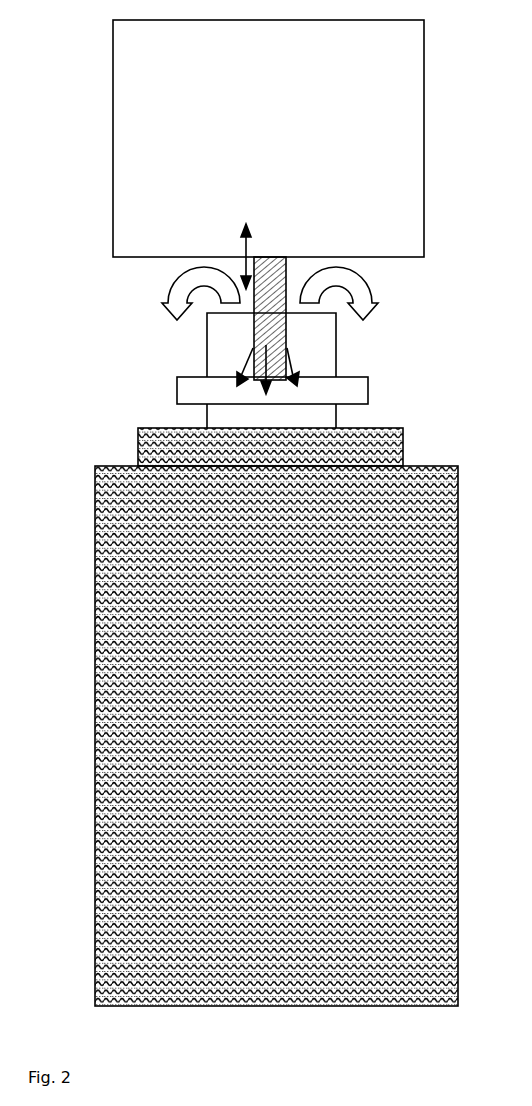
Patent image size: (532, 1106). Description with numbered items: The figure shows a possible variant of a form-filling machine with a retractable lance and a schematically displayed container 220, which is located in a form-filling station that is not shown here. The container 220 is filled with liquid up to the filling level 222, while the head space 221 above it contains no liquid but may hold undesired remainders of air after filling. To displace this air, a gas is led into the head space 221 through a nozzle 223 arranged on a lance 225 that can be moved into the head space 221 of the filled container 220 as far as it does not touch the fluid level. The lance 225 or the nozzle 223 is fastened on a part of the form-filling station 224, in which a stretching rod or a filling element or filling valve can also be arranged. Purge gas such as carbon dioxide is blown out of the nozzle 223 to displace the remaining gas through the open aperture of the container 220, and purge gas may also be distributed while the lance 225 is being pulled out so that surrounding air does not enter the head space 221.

The container 220 is at (148, 580).
The head space 221 is at (215, 365).
The filling level 222 is at (382, 428).
The nozzle 223 is at (263, 380).
The part of the form-filling station 224 is at (365, 123).
The lance 225 is at (287, 282).